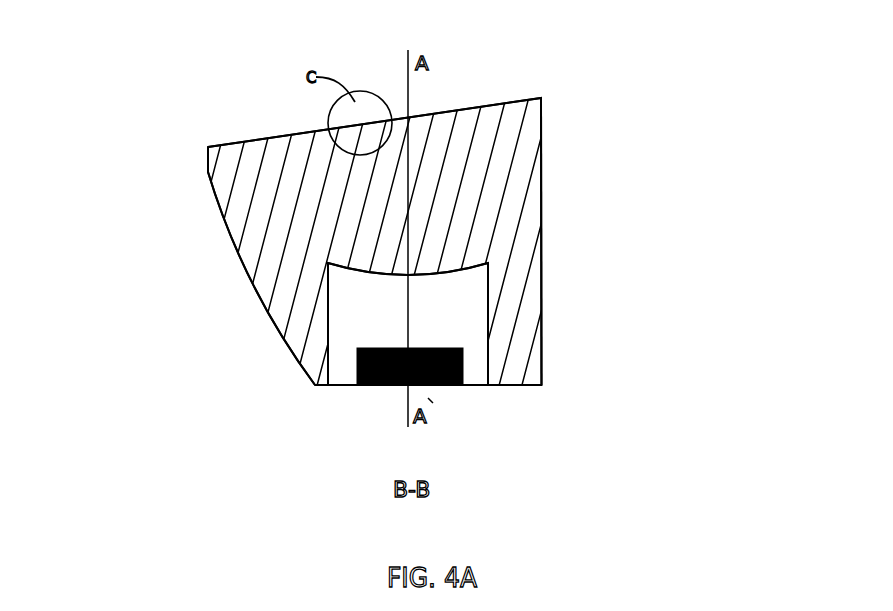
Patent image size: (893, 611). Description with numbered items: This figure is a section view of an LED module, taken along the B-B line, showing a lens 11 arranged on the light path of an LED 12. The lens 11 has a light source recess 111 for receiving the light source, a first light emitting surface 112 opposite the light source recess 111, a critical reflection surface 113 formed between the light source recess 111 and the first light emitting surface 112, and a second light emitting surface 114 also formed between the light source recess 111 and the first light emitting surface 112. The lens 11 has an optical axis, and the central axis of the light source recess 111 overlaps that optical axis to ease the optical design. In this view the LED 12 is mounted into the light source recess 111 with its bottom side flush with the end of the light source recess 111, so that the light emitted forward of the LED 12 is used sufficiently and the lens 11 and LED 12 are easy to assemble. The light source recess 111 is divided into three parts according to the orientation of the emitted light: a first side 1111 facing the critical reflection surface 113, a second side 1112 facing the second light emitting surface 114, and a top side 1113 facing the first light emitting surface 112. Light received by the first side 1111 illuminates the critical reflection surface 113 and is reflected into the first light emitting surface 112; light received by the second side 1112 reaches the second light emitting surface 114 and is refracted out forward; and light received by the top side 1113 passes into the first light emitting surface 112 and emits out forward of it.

The lens 11 is at (218, 113).
The first light emitting surface 112 is at (465, 105).
The critical reflection surface 113 is at (233, 242).
The second light emitting surface 114 is at (543, 205).
The light source recess 111 is at (637, 245).
The first side 1111 is at (422, 279).
The top side 1113 is at (491, 283).
The second side 1112 is at (332, 352).
The LED 12 is at (448, 386).